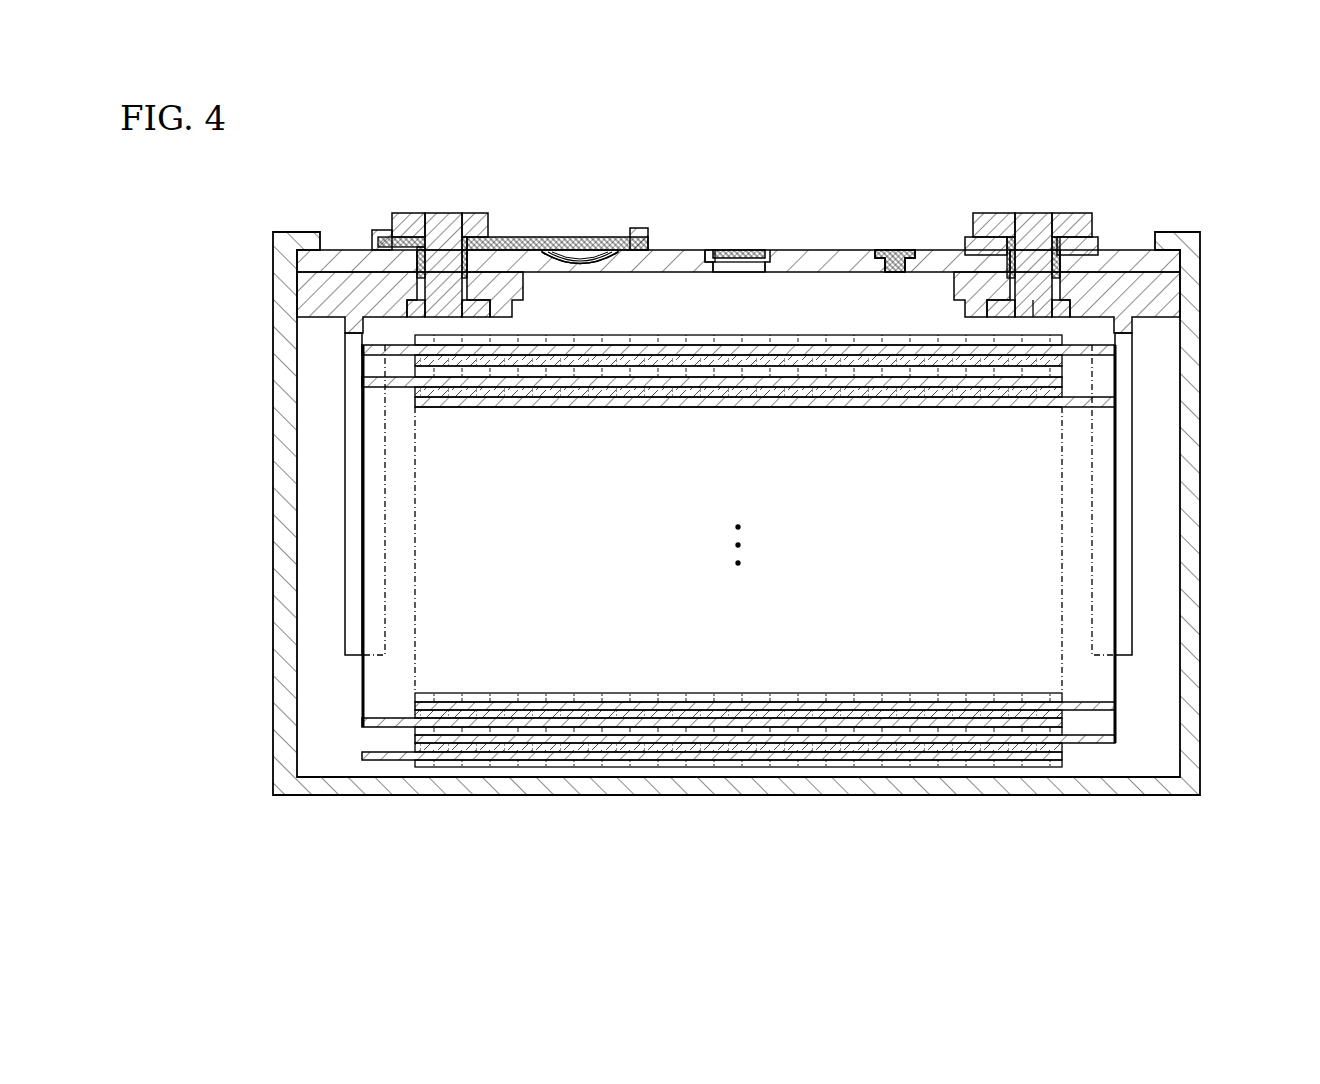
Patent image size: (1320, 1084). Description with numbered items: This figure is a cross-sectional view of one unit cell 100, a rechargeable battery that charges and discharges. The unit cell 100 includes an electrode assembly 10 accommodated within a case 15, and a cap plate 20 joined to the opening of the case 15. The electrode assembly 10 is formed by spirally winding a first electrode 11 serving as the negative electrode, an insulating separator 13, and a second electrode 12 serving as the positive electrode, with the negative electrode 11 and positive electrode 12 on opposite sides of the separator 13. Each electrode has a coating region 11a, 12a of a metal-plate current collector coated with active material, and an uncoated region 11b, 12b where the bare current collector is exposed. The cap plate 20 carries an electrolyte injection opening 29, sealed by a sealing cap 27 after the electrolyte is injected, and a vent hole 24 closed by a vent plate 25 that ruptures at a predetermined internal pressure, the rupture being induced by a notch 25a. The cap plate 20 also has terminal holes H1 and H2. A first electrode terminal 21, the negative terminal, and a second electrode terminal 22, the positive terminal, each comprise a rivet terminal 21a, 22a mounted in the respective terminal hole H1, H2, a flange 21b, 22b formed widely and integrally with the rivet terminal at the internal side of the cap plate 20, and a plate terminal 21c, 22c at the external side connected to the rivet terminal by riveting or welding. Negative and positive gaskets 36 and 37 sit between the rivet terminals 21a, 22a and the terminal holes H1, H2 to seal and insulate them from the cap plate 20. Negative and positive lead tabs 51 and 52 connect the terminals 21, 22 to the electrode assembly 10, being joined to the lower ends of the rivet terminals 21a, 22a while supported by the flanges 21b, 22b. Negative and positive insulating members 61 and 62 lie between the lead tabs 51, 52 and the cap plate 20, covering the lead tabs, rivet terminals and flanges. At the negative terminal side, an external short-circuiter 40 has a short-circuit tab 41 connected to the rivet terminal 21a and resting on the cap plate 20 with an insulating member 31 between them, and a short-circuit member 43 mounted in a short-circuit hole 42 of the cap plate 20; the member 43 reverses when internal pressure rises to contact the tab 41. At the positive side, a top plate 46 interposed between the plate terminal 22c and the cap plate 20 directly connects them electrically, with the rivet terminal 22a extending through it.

The unit cell 100 is at (764, 152).
The electrode assembly 10 is at (870, 780).
The first electrode 11 is at (375, 852).
The coating region 11a is at (520, 760).
The uncoated region 11b is at (392, 758).
The second electrode 12 is at (965, 852).
The coating region 12a is at (980, 745).
The uncoated region 12b is at (1097, 745).
The separator 13 is at (748, 767).
The case 15 is at (1200, 435).
The cap plate 20 is at (815, 250).
The first electrode terminal 21 is at (444, 211).
The rivet terminal 21a is at (443, 300).
The flange 21b is at (500, 234).
The plate terminal 21c is at (471, 213).
The second electrode terminal 22 is at (1034, 211).
The rivet terminal 22a is at (1037, 302).
The flange 22b is at (990, 290).
The plate terminal 22c is at (1080, 213).
The vent hole 24 is at (744, 272).
The vent plate 25 is at (755, 250).
The notch 25a is at (714, 250).
The sealing cap 27 is at (900, 260).
The electrolyte injection opening 29 is at (888, 250).
The insulating member 31 is at (640, 228).
The negative gasket 36 is at (374, 240).
The positive gasket 37 is at (988, 237).
The external short-circuiter 40 is at (586, 246).
The short-circuit tab 41 is at (550, 237).
The short-circuit hole 42 is at (604, 265).
The short-circuit member 43 is at (567, 264).
The top plate 46 is at (1100, 242).
The negative lead tab 51 is at (340, 458).
The positive lead tab 52 is at (1136, 618).
The negative insulating member 61 is at (318, 290).
The positive insulating member 62 is at (1185, 290).
The terminal hole H1 is at (415, 241).
The terminal hole H2 is at (1040, 220).